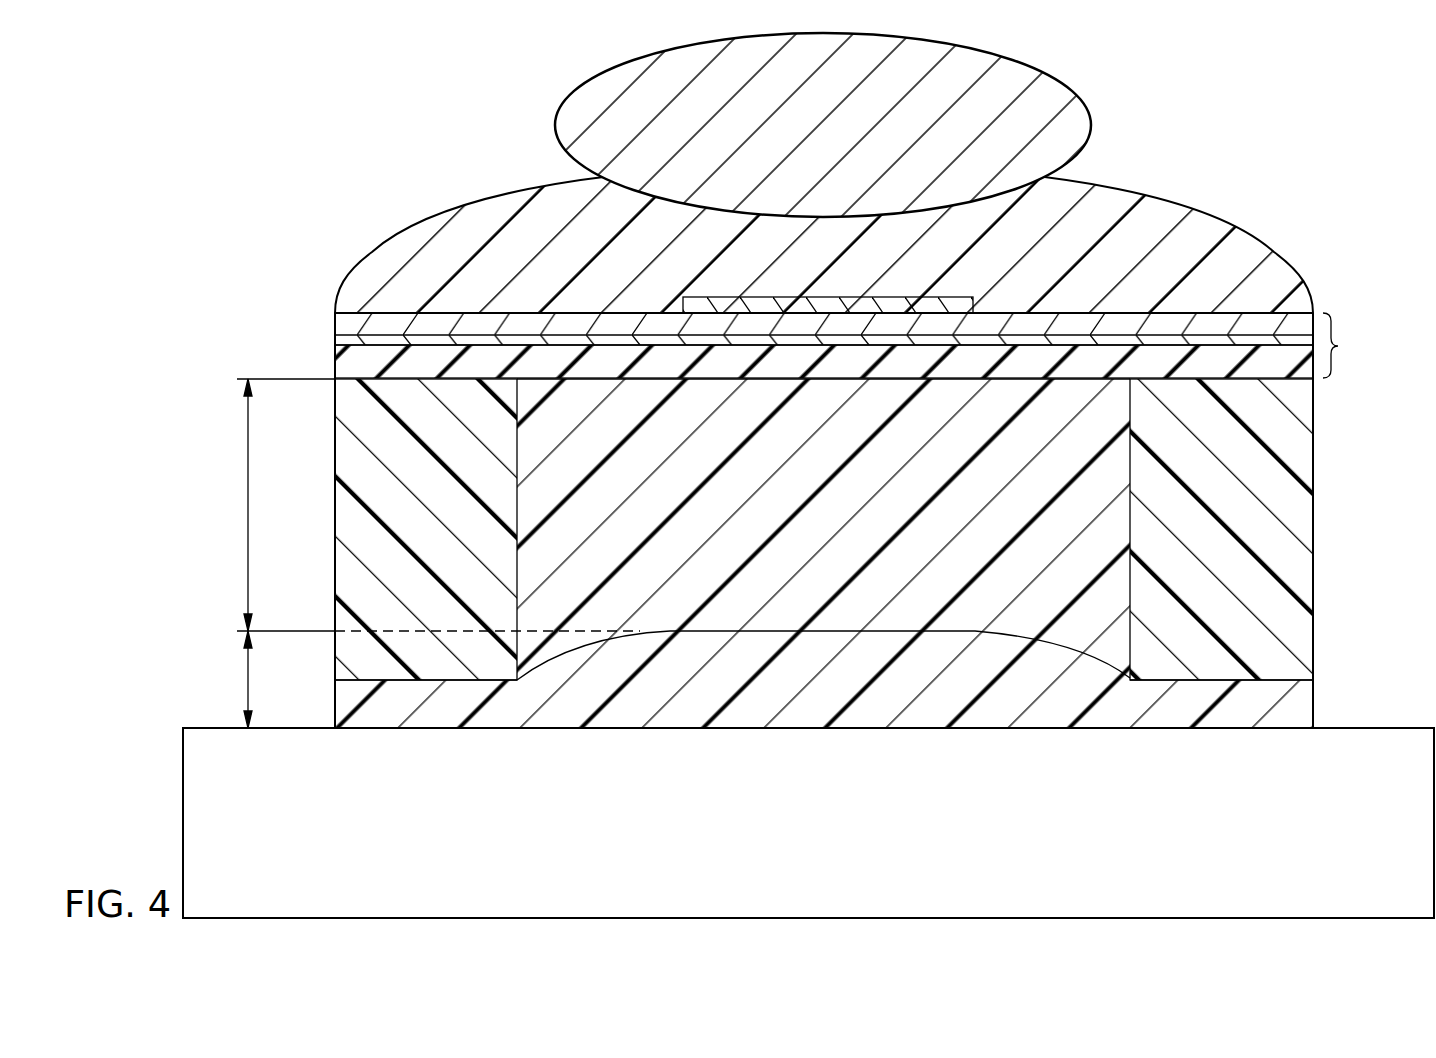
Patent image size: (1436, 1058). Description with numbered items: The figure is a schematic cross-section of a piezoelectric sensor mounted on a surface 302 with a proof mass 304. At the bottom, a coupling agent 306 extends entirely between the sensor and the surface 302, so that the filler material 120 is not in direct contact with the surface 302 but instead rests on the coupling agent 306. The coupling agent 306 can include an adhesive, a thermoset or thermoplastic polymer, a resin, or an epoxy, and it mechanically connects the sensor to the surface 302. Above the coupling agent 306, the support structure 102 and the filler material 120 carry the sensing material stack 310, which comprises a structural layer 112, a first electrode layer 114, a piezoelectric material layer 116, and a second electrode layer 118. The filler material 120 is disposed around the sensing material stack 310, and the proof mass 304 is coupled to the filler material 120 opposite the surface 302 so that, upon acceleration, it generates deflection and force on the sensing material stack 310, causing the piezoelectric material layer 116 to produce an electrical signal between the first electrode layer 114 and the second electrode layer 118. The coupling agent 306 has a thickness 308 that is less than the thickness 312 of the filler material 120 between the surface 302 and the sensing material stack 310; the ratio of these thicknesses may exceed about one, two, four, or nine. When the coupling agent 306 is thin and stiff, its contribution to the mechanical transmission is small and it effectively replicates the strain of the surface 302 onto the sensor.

The support structure 102 is at (341, 515).
The structural layer 112 is at (832, 368).
The first electrode layer 114 is at (931, 340).
The piezoelectric material layer 116 is at (1028, 322).
The second electrode layer 118 is at (797, 305).
The filler material 120 is at (1112, 190).
The surface 302 is at (1367, 727).
The proof mass 304 is at (558, 122).
The coupling agent 306 is at (341, 705).
The thickness of the coupling agent 308 is at (248, 665).
The sensing material stack 310 is at (1353, 345).
The thickness of the filler material 312 is at (248, 503).